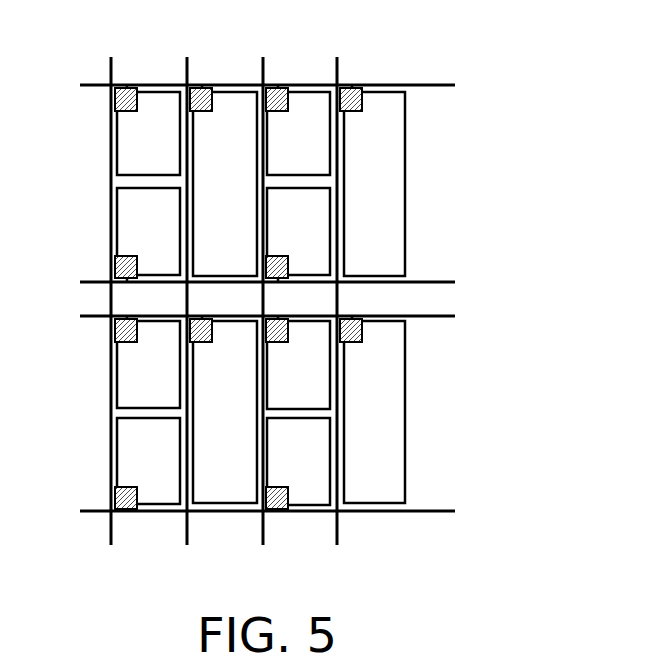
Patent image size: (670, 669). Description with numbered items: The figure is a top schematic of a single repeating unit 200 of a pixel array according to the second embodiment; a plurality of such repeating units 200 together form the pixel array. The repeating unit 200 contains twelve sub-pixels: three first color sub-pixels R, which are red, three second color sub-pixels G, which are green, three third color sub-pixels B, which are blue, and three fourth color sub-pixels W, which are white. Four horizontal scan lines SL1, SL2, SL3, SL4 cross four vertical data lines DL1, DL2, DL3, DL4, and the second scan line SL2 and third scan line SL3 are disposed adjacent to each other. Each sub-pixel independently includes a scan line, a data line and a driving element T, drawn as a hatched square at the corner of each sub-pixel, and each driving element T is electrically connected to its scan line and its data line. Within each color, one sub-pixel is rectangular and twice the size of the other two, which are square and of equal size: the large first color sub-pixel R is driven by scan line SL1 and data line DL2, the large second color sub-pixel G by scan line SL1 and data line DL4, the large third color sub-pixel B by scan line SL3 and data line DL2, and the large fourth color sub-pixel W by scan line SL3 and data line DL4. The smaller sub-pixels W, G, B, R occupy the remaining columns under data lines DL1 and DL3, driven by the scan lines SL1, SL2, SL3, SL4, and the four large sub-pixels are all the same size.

The repeating unit 200 is at (322, 302).
The driving element T is at (115, 101).
The first data line DL1 is at (110, 281).
The second data line DL2 is at (187, 281).
The third data line DL3 is at (263, 281).
The fourth data line DL4 is at (338, 281).
The first scan line SL1 is at (244, 85).
The second scan line SL2 is at (244, 282).
The third scan line SL3 is at (244, 316).
The fourth scan line SL4 is at (244, 511).
The fourth color sub-pixel W is at (261, 297).
The first color sub-pixel R is at (261, 298).
The second color sub-pixel G is at (261, 298).
The third color sub-pixel B is at (261, 297).